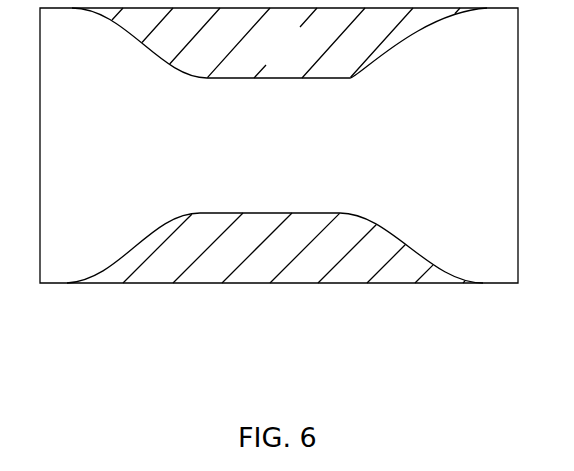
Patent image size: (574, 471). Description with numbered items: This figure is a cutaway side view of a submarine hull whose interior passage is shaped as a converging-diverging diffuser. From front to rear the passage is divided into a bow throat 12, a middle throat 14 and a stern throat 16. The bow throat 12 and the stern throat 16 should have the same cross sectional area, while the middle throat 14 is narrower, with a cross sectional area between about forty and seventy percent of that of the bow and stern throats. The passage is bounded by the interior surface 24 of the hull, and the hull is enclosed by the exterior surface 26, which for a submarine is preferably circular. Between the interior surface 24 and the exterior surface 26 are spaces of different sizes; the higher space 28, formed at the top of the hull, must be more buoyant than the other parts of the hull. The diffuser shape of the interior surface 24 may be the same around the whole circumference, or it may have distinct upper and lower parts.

The bow throat 12 is at (96, 158).
The middle throat 14 is at (296, 158).
The stern throat 16 is at (481, 158).
The interior surface 24 is at (110, 268).
The exterior surface 26 is at (203, 283).
The higher space 28 is at (293, 58).